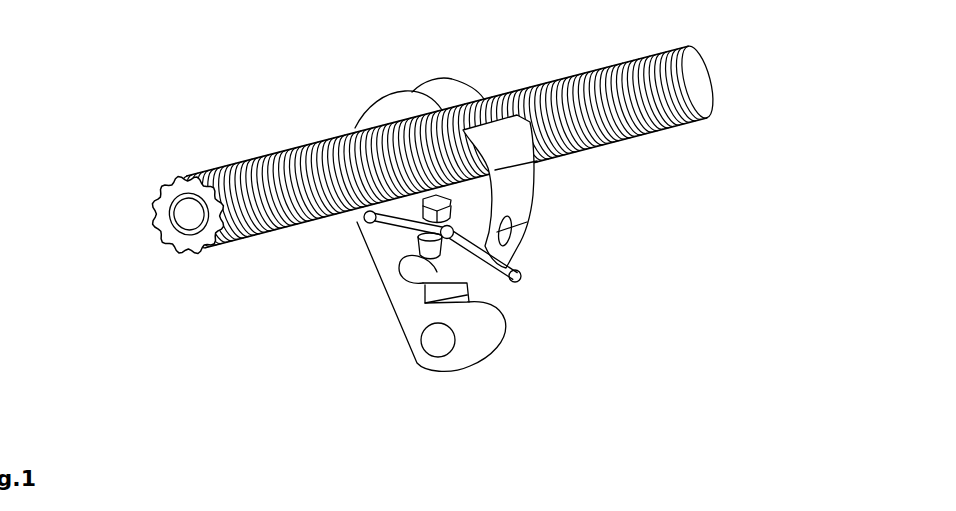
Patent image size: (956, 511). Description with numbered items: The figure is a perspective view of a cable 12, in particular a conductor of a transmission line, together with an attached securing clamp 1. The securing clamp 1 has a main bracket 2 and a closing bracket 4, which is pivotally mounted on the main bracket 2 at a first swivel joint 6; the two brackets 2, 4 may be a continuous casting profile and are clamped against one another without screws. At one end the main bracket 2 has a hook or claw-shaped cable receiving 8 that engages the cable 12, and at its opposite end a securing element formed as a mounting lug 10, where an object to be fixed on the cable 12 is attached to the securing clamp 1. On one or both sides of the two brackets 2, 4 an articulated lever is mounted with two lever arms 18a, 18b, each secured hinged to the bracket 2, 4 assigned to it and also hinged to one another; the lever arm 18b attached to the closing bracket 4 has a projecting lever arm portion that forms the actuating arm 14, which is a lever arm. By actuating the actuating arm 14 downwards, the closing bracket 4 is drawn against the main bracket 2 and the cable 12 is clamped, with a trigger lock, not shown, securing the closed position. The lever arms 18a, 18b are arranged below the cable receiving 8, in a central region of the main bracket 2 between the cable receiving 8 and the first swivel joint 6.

The securing clamp 1 is at (532, 311).
The main bracket 2 is at (380, 235).
The closing bracket 4 is at (483, 192).
The first swivel joint 6 is at (400, 263).
The cable receiving 8 is at (440, 110).
The mounting lug 10 is at (437, 339).
The cable 12 is at (690, 105).
The actuating arm 14 is at (517, 276).
The lever arm 18a is at (413, 236).
The lever arm 18b is at (483, 250).